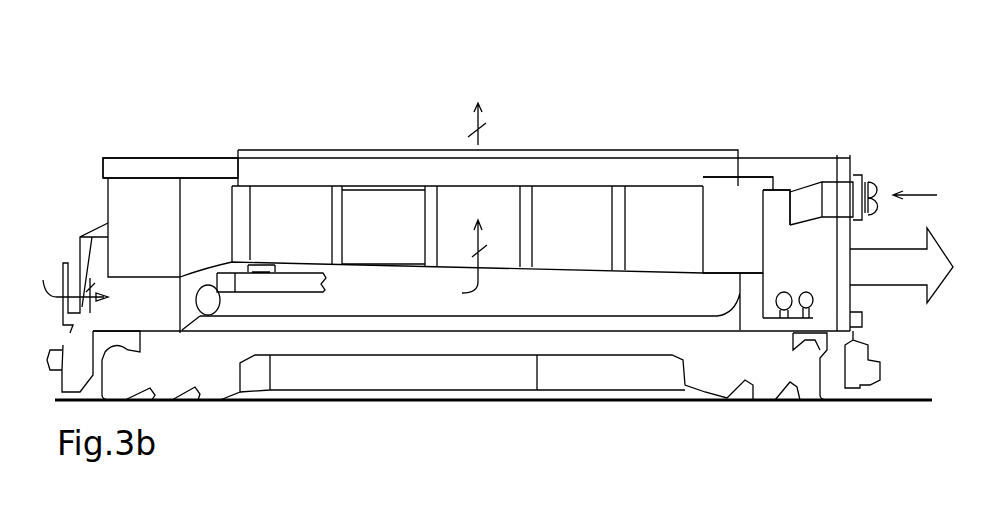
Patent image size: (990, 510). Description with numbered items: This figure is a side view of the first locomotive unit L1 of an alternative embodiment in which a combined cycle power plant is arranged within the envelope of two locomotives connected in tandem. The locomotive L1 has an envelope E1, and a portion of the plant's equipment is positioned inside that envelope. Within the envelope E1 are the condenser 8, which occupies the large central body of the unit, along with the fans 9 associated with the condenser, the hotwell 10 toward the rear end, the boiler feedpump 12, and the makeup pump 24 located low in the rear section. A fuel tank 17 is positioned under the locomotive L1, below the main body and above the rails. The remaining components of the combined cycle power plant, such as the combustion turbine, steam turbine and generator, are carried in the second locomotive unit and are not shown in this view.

The envelope E1 is at (226, 139).
The locomotive unit L1 is at (746, 112).
The condenser 8 is at (397, 200).
The fans 9 is at (212, 286).
The hotwell 10 is at (757, 290).
The boiler feedpump 12 is at (786, 292).
The fuel tank 17 is at (380, 372).
The makeup pump 24 is at (808, 293).